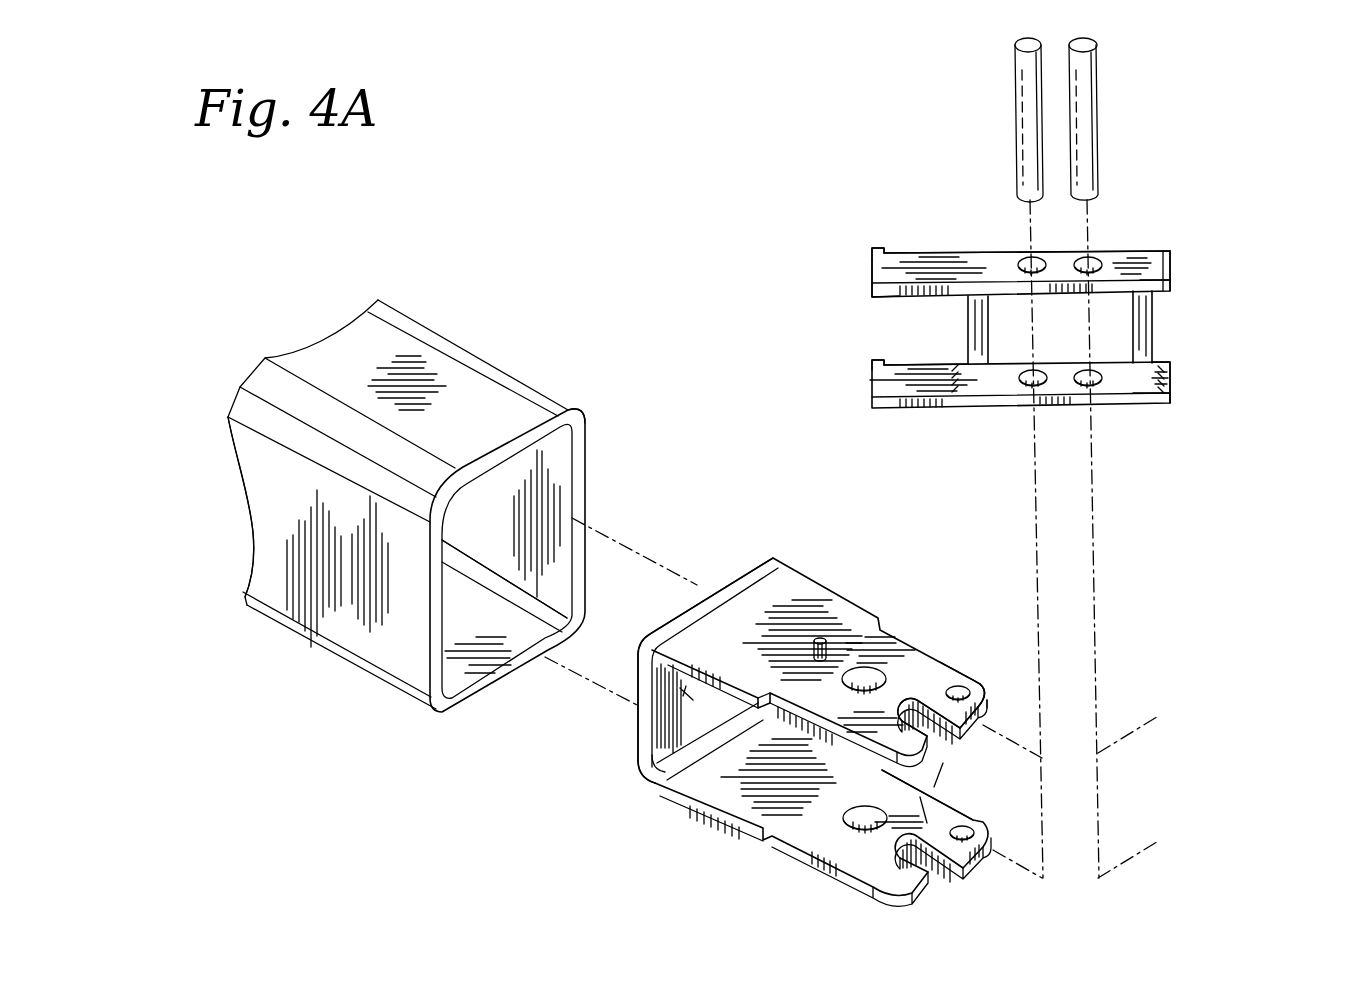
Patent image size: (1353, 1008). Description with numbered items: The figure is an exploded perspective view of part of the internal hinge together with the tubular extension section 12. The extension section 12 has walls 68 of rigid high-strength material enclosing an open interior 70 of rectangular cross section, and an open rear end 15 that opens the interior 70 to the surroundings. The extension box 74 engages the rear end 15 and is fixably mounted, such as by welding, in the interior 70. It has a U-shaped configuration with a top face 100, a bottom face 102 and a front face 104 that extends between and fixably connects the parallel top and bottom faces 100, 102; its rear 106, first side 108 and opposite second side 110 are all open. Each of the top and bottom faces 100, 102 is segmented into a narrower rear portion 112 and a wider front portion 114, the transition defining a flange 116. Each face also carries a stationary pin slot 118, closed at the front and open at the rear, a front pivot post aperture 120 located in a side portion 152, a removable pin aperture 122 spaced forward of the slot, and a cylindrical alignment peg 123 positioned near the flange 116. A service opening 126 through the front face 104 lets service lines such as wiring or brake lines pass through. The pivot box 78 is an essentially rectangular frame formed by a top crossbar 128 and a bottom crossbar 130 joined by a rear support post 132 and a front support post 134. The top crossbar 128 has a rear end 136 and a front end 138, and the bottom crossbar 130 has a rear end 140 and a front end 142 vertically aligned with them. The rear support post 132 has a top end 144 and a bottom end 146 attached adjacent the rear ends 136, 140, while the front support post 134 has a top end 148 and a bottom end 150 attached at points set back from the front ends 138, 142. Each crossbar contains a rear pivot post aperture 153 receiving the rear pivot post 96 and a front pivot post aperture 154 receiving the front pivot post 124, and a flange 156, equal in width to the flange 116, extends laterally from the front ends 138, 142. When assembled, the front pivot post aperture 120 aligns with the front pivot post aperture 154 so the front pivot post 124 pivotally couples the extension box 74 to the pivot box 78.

The extension section 12 is at (387, 340).
The rear end 15 is at (578, 418).
The walls 68 is at (342, 610).
The interior 70 is at (499, 487).
The extension box 74 is at (797, 583).
The pivot box 78 is at (930, 373).
The rear pivot post 96 is at (1088, 94).
The top face 100 is at (822, 636).
The bottom face 102 is at (710, 822).
The front face 104 is at (637, 712).
The rear 106 is at (926, 800).
The first side 108 is at (783, 748).
The second side 110 is at (895, 824).
The rear portion 112 is at (943, 697).
The front portion 114 is at (763, 583).
The flange 116 is at (697, 768).
The stationary pin slot 118 is at (935, 728).
The front pivot post aperture 120 is at (980, 684).
The removable pin aperture 122 is at (920, 671).
The alignment peg 123 is at (867, 677).
The front pivot post 124 is at (1027, 97).
The service opening 126 is at (680, 722).
The top crossbar 128 is at (927, 252).
The bottom crossbar 130 is at (1096, 400).
The rear support post 132 is at (1150, 330).
The front support post 134 is at (975, 327).
The rear end 136 is at (1170, 254).
The front end 138 is at (872, 272).
The rear end 140 is at (1170, 362).
The front end 142 is at (872, 374).
The top end 144 is at (1170, 264).
The bottom end 146 is at (1152, 402).
The top end 148 is at (978, 258).
The bottom end 150 is at (977, 404).
The side portion 152 is at (975, 692).
The rear pivot post aperture 153 is at (1088, 260).
The front pivot post aperture 154 is at (1032, 258).
The flange 156 is at (872, 249).